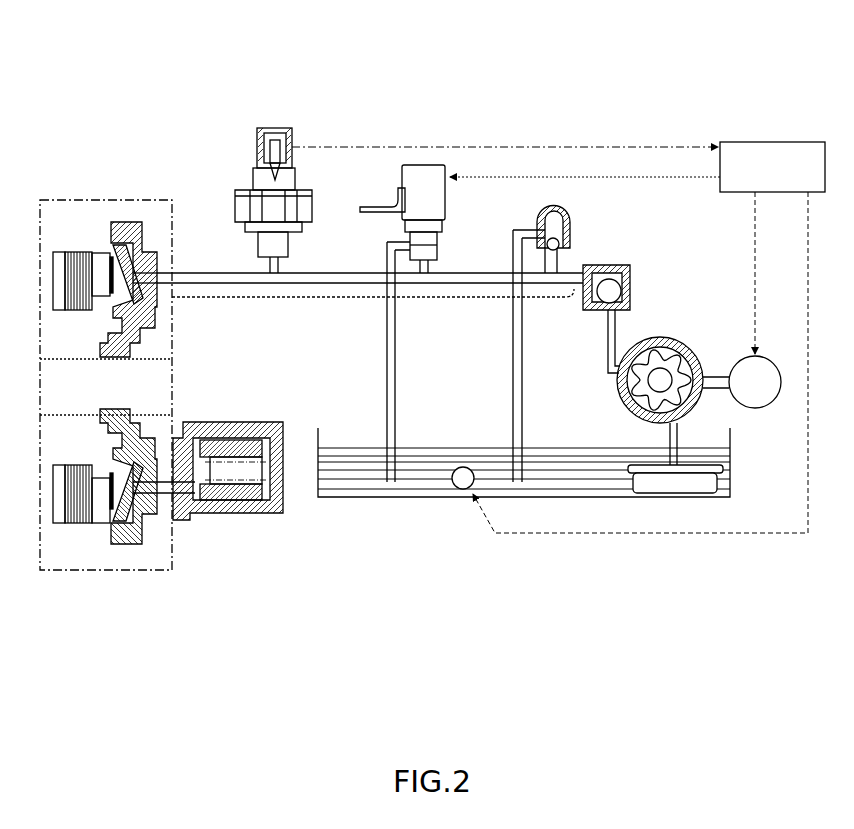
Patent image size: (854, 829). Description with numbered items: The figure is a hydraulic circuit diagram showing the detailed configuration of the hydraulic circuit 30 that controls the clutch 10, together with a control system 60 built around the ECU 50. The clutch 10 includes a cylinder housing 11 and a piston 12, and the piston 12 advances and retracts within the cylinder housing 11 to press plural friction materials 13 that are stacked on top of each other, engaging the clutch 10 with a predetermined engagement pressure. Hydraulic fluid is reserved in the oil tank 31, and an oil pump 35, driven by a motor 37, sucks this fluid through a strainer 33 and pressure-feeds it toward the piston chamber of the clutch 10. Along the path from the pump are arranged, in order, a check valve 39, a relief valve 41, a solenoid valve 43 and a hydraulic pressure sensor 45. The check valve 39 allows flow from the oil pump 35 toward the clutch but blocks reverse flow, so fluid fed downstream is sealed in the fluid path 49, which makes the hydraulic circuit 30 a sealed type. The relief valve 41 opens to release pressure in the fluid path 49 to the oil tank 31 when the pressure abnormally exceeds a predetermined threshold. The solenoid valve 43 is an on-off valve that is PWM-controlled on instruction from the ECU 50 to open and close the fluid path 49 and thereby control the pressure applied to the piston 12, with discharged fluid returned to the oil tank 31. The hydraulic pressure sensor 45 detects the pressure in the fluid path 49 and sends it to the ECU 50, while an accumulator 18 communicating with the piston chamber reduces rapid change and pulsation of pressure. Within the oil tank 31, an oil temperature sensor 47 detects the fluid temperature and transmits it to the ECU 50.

The clutch 10 is at (50, 198).
The cylinder housing 11 is at (135, 222).
The piston 12 is at (113, 245).
The friction materials 13 is at (80, 310).
The accumulator 18 is at (242, 420).
The hydraulic circuit 30 is at (512, 120).
The oil tank 31 is at (733, 474).
The strainer 33 is at (700, 464).
The oil pump 35 is at (666, 338).
The motor 37 is at (765, 357).
The check valve 39 is at (628, 266).
The relief valve 41 is at (574, 220).
The solenoid valve 43 is at (430, 164).
The hydraulic pressure sensor 45 is at (281, 127).
The oil temperature sensor 47 is at (452, 480).
The fluid path 49 is at (362, 297).
The ECU 50 is at (777, 140).
The control system 60 is at (651, 92).